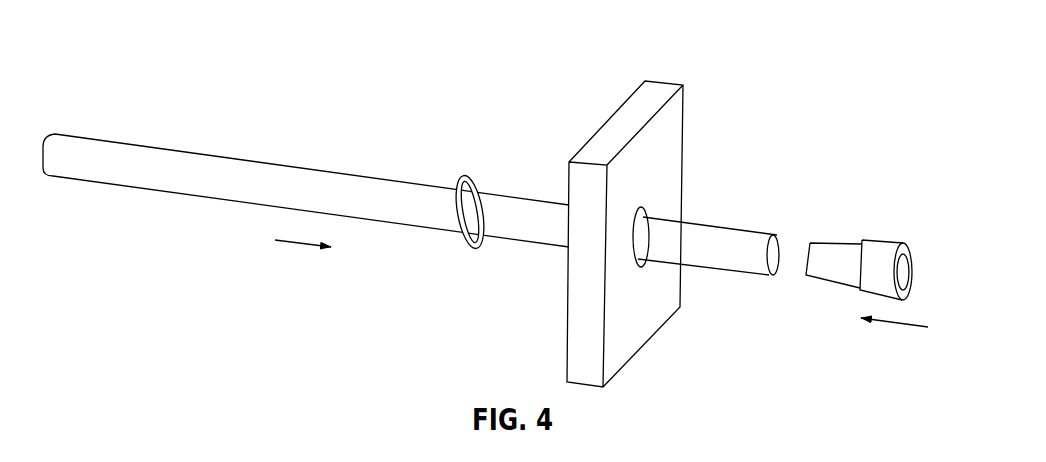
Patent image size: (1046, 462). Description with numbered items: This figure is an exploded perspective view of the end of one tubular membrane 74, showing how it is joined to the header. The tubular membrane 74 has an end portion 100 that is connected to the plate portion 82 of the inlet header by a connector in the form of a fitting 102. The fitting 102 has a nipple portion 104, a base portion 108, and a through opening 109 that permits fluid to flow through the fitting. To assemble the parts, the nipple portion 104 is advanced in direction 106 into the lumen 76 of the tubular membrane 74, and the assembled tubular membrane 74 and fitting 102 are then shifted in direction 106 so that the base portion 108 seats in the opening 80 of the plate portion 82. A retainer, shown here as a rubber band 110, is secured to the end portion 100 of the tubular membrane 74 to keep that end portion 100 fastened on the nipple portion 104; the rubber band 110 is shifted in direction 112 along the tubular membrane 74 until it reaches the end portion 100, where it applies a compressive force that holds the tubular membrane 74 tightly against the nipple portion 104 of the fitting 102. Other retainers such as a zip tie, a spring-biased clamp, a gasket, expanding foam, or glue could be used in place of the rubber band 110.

The tubular membrane 74 is at (718, 223).
The lumen 76 is at (783, 250).
The opening 80 is at (633, 245).
The plate portion 82 is at (665, 80).
The end portion 100 is at (732, 260).
The fitting 102 is at (883, 238).
The nipple portion 104 is at (835, 262).
The direction 106 is at (902, 323).
The base portion 108 is at (877, 283).
The connector opening 109 is at (908, 273).
The rubber band 110 is at (477, 175).
The direction 112 is at (310, 247).